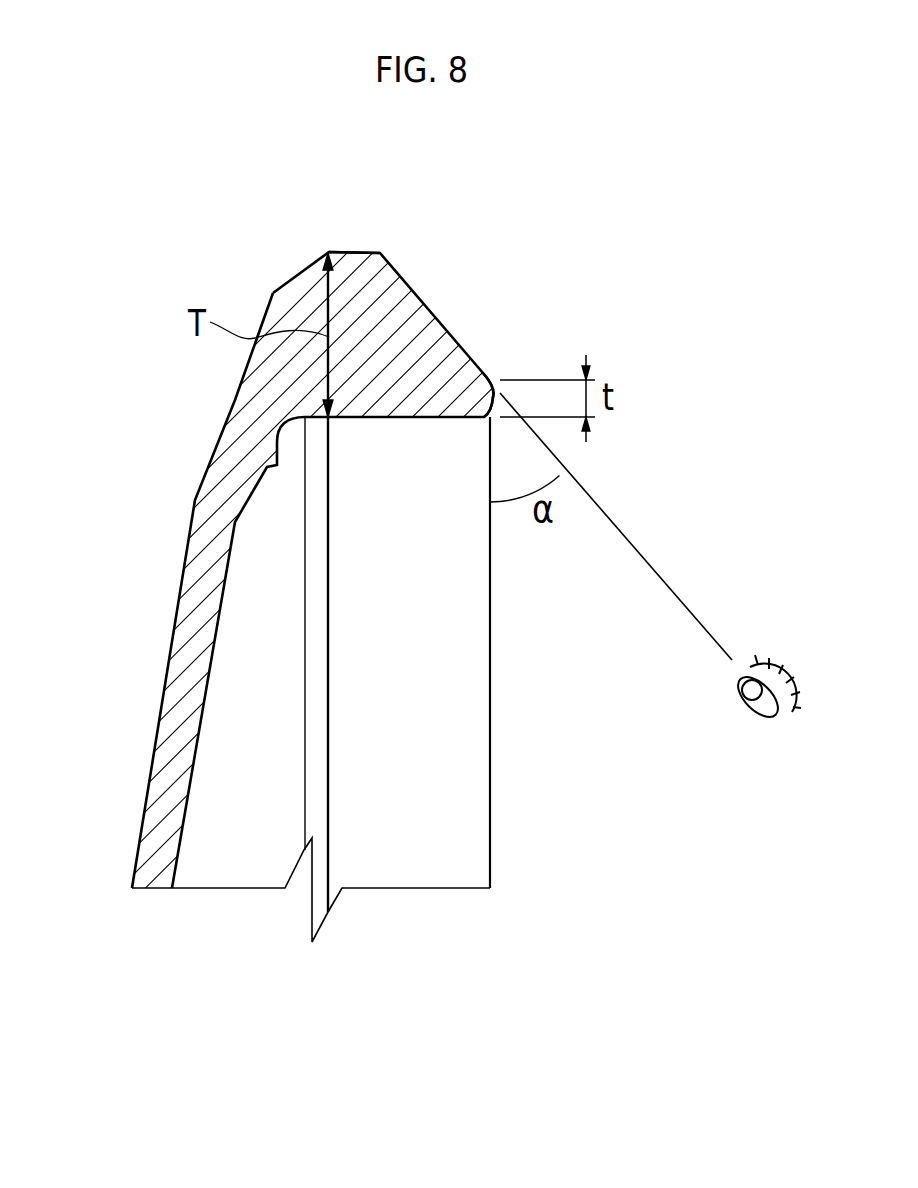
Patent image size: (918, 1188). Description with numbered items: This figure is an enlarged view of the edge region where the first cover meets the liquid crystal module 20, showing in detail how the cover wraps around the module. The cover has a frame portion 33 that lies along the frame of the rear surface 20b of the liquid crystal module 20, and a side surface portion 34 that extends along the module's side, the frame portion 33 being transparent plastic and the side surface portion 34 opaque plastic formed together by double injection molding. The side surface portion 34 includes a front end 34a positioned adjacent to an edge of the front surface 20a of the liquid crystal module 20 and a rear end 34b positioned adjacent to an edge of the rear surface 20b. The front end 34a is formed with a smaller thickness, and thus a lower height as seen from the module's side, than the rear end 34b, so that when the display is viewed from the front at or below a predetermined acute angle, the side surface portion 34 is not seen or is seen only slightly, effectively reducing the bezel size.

The liquid crystal module 20 is at (423, 878).
The front surface 20a is at (495, 705).
The rear surface 20b is at (330, 758).
The frame portion 33 is at (182, 622).
The side surface portion 34 is at (393, 288).
The front end 34a is at (492, 393).
The rear end 34b is at (329, 252).